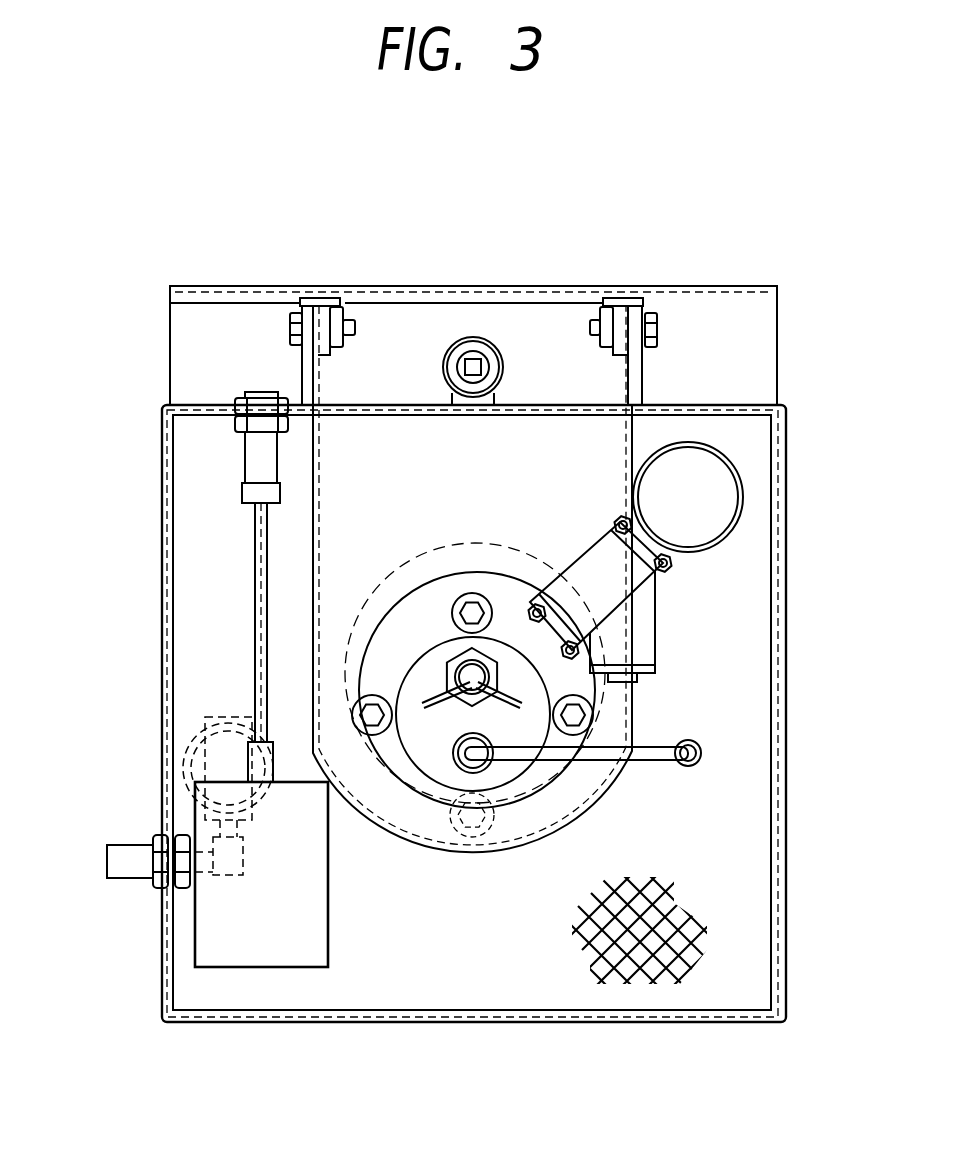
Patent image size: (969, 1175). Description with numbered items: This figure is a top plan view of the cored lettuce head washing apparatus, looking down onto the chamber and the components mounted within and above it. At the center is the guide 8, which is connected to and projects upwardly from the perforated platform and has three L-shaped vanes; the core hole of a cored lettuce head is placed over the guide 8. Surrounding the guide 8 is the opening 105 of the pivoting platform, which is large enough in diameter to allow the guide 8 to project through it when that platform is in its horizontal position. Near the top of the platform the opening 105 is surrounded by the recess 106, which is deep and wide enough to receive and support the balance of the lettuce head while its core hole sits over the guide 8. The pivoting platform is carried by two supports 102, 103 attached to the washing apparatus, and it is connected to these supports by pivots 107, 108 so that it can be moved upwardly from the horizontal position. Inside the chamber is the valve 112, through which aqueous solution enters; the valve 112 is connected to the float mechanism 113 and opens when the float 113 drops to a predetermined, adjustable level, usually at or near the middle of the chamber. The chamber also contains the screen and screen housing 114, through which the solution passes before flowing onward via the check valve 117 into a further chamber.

The guide 8 is at (437, 703).
The support 102 is at (648, 380).
The support 103 is at (298, 363).
The opening 105 is at (442, 770).
The recess 106 is at (523, 800).
The pivot 107 is at (592, 313).
The pivot 108 is at (350, 318).
The valve 112 is at (262, 396).
The float mechanism 113 is at (292, 967).
The screen and screen housing 114 is at (742, 477).
The check valve 117 is at (655, 637).